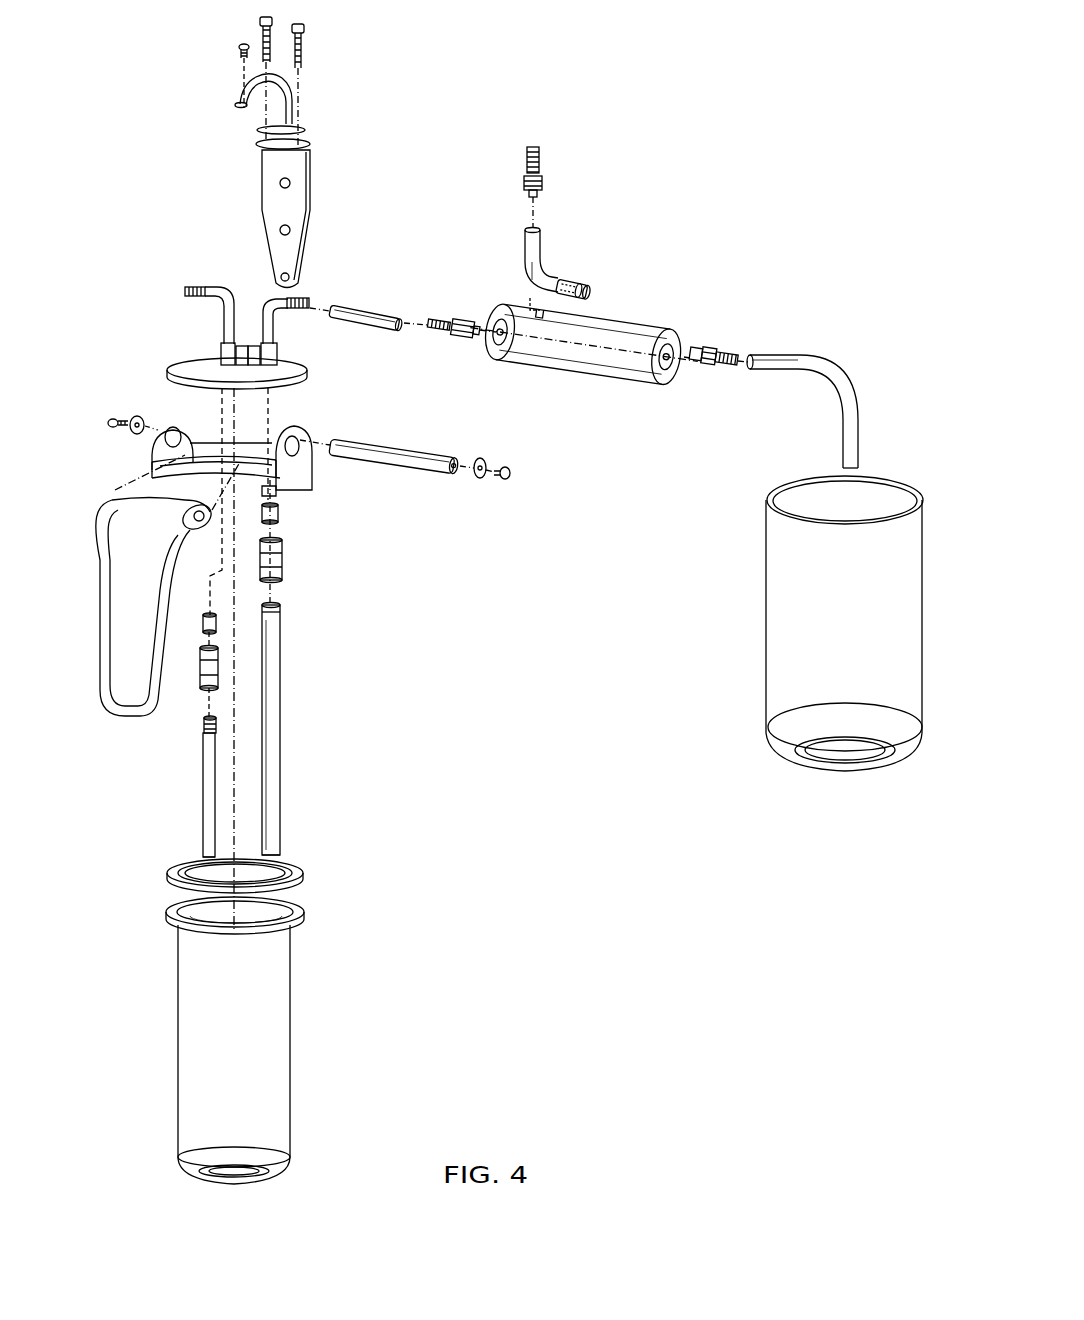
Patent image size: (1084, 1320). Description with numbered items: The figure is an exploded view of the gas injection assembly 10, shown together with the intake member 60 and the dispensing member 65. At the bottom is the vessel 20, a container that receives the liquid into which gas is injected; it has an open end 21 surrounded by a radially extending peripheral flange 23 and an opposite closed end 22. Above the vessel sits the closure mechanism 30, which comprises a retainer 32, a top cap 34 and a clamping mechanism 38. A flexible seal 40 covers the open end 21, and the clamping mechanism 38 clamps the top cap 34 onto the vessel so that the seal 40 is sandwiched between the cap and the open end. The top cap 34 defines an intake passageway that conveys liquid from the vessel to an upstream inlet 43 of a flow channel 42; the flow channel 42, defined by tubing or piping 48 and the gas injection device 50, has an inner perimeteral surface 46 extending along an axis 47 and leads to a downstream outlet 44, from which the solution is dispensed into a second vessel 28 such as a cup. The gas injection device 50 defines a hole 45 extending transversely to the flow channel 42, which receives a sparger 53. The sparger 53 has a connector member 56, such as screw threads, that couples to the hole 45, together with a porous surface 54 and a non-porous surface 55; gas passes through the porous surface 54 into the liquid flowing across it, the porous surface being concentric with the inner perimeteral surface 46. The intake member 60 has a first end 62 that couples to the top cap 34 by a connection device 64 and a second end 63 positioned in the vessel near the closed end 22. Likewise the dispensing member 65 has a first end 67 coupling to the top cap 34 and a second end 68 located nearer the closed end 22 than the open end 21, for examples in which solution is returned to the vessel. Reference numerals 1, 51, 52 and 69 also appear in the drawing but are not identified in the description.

The system 1 is at (727, 145).
The gas injection assembly 10 is at (617, 157).
The vessel 20 is at (320, 1035).
The open end 21 is at (163, 915).
The closed end 22 is at (177, 1170).
The peripheral flange 23 is at (302, 913).
The second vessel 28 is at (748, 645).
The closure mechanism 30 is at (125, 465).
The retainer 32 is at (300, 170).
The top cap 34 is at (215, 368).
The clamping mechanism 38 is at (107, 568).
The flexible seal 40 is at (300, 880).
The flow channel 42 is at (625, 356).
The upstream inlet 43 is at (302, 323).
The downstream outlet 44 is at (812, 440).
The hole 45 is at (530, 303).
The inner perimeteral surface 46 is at (634, 334).
The axis 47 is at (583, 340).
The tubing or piping 48 is at (372, 305).
The gas injection device 50 is at (560, 393).
The first end 51 is at (503, 372).
The second end 52 is at (652, 386).
The sparger 53 is at (549, 236).
The porous surface 54 is at (573, 283).
The non-porous surface 55 is at (537, 268).
The connector member 56 is at (540, 180).
The intake member 60 is at (278, 780).
The first end 62 is at (292, 629).
The second end 63 is at (292, 838).
The connection device 64 is at (292, 556).
The dispensing member 65 is at (206, 757).
The first end 67 is at (196, 727).
The second end 68 is at (194, 836).
The spacer 69 is at (192, 662).